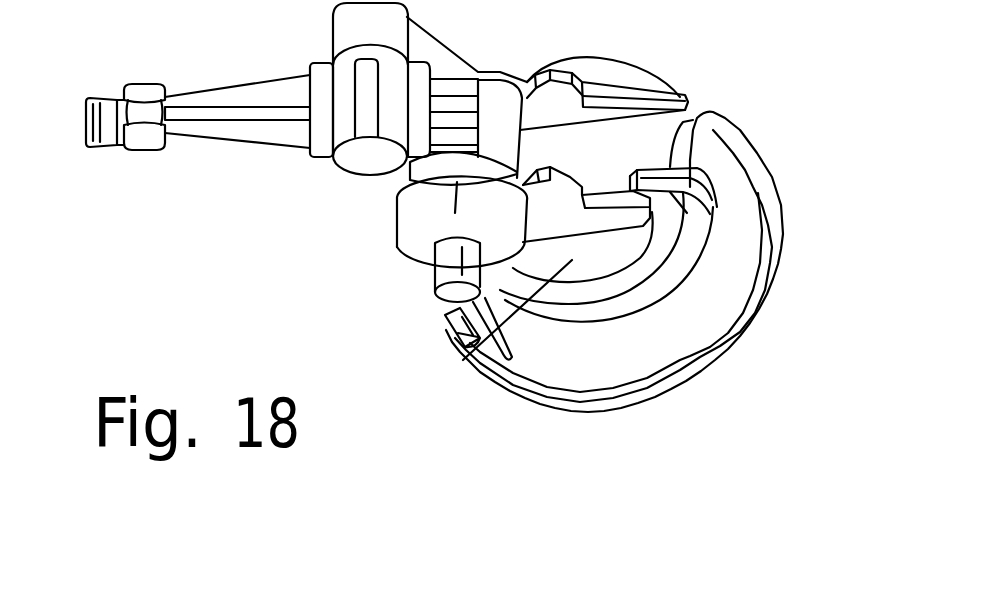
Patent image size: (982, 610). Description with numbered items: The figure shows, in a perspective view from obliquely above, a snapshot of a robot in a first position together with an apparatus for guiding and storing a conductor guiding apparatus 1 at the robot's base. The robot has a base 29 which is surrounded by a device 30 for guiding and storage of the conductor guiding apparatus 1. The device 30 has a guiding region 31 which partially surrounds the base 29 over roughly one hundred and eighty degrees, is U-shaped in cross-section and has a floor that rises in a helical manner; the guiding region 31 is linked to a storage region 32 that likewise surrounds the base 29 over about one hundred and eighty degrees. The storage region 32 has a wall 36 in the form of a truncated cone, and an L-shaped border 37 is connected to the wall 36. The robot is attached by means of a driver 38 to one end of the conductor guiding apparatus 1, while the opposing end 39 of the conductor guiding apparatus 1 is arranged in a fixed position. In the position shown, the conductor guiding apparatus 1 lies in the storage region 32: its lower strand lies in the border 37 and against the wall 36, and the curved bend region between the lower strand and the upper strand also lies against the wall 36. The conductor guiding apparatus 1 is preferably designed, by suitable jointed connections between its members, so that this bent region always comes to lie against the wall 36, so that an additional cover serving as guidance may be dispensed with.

The conductor guiding apparatus 1 is at (767, 182).
The base 29 is at (483, 350).
The device 30 is at (782, 118).
The guiding region 31 is at (595, 57).
The storage region 32 is at (790, 268).
The wall 36 is at (682, 337).
The border 37 is at (585, 407).
The driver 38 is at (717, 207).
The opposing end 39 is at (445, 323).